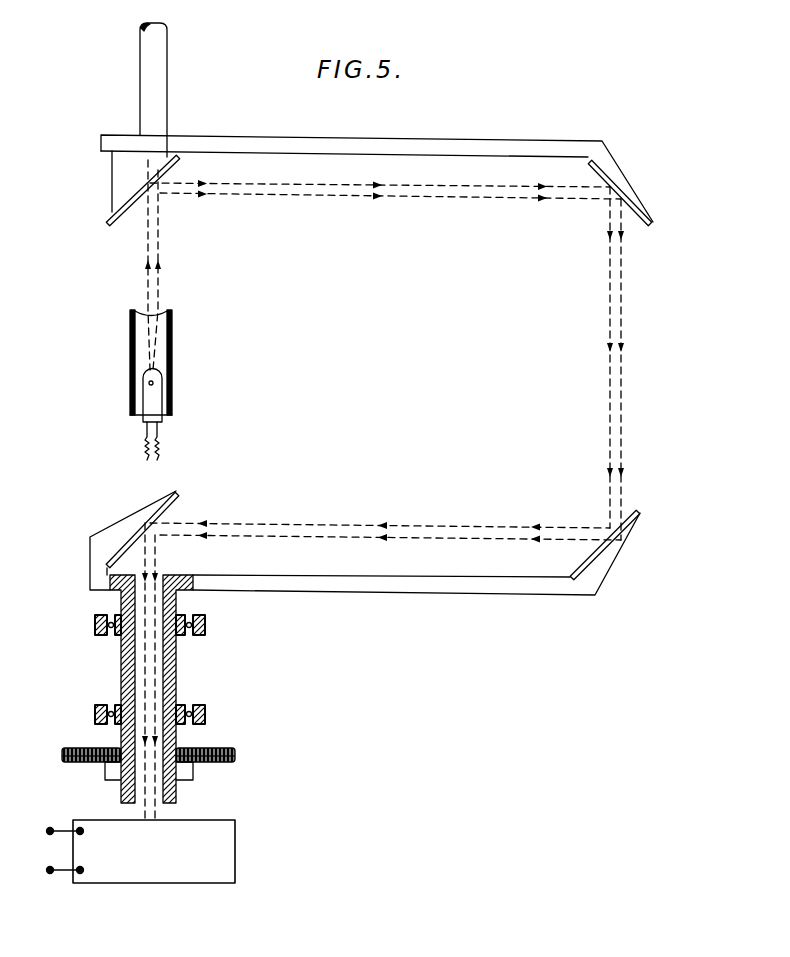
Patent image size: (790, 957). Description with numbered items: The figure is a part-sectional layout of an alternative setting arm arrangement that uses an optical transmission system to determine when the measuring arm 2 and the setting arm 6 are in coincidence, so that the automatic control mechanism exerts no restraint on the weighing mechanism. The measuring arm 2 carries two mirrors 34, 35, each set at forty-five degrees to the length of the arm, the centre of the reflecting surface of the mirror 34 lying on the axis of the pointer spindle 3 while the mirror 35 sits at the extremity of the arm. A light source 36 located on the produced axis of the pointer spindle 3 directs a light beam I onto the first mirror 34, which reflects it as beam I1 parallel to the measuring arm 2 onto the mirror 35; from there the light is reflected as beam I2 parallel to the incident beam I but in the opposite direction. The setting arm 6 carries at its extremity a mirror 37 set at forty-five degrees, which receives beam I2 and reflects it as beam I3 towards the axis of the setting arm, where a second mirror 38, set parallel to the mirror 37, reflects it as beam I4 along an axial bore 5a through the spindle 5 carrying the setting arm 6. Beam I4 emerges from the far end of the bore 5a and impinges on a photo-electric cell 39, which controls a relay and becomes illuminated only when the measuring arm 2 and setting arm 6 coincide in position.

The measuring arm 2 is at (313, 139).
The pointer spindle 3 is at (157, 62).
The spindle 5 is at (148, 689).
The axial bore 5a is at (138, 662).
The setting arm 6 is at (330, 586).
The first mirror 34 is at (142, 202).
The mirror 35 is at (641, 221).
The light source 36 is at (172, 341).
The mirror 37 is at (627, 520).
The second mirror 38 is at (179, 496).
The photo-electric cell 39 is at (158, 860).
The light beam I is at (160, 260).
The reflected light beam I1 is at (379, 199).
The reflected light beam I2 is at (607, 348).
The reflected light beam I3 is at (376, 527).
The reflected light beam I4 is at (166, 577).